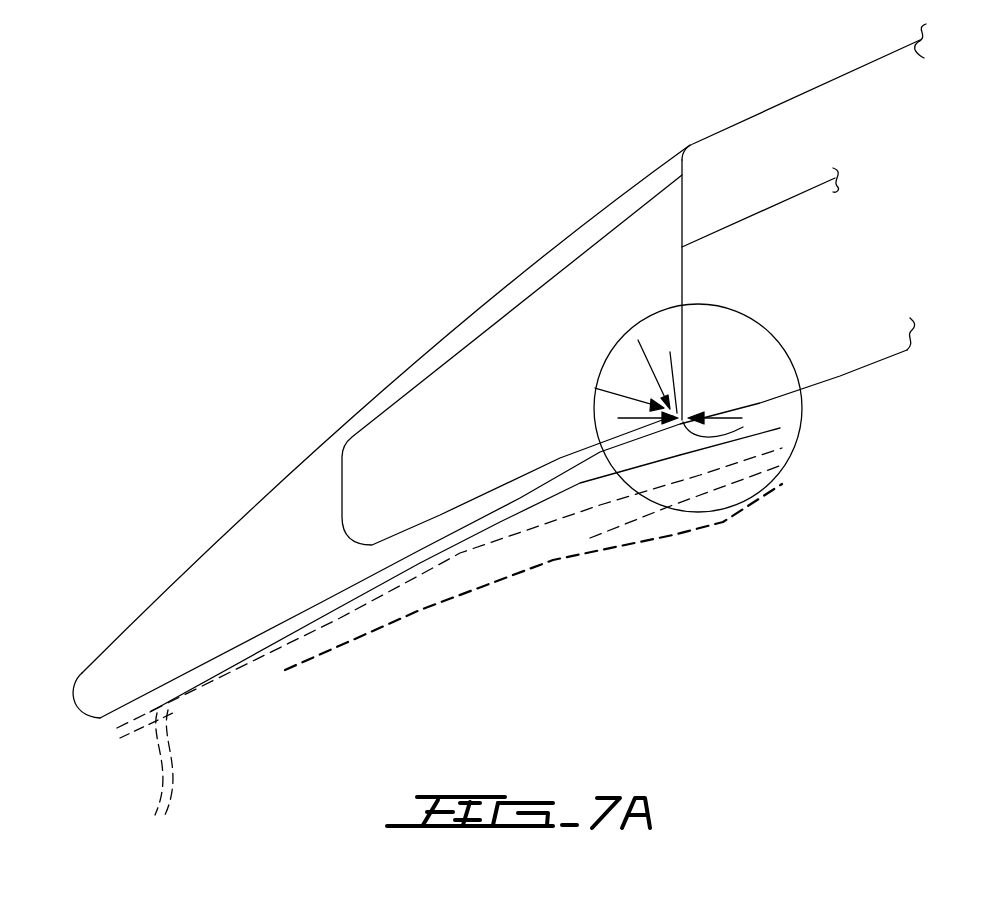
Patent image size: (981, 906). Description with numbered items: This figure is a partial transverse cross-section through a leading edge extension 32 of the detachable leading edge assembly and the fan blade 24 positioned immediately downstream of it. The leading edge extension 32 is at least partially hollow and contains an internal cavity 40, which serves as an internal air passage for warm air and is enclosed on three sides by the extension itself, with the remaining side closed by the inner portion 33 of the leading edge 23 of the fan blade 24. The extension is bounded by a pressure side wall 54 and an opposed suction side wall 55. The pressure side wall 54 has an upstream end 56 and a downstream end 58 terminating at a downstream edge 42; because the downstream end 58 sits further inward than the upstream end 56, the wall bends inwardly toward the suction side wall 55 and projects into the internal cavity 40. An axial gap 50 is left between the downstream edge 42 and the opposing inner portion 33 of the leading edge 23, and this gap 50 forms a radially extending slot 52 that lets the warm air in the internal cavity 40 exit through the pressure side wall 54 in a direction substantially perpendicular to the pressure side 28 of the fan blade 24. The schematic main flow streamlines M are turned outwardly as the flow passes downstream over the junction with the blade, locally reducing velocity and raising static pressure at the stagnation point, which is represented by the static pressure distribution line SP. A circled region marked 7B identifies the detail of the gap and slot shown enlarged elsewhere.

The leading edge 23 is at (805, 205).
The fan blade 24 is at (841, 293).
The pressure side 28 is at (853, 375).
The leading edge extension 32 is at (262, 540).
The inner portion 33 is at (805, 205).
The internal cavity 40 is at (540, 398).
The downstream edge 42 is at (680, 425).
The gap 50 is at (689, 388).
The slot 52 is at (681, 414).
The pressure side wall 54 is at (566, 472).
The suction side wall 55 is at (530, 280).
The upstream end 56 is at (372, 575).
The downstream end 58 is at (630, 437).
The static pressure distribution line SP is at (465, 545).
The main flow streamlines M is at (158, 779).
The detail circle 7B is at (783, 465).